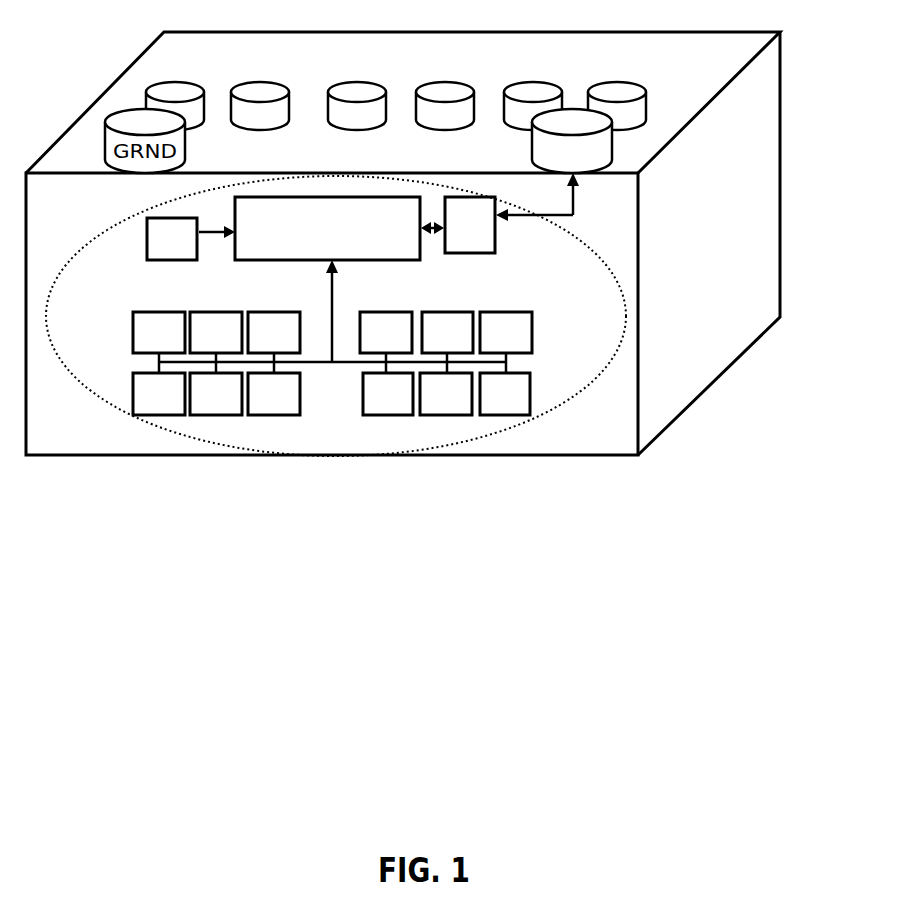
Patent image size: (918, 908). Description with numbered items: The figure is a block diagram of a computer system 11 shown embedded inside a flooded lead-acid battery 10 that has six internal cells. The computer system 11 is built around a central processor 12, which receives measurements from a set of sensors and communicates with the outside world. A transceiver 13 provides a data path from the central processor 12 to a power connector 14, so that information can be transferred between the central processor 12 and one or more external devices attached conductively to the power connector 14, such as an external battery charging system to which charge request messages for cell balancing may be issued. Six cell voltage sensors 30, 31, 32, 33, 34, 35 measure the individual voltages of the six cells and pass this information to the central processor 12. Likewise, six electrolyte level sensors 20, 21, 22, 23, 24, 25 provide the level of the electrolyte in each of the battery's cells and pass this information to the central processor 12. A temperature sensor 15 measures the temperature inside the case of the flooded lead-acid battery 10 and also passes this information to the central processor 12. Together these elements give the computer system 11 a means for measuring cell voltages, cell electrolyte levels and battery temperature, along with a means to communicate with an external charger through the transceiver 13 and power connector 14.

The flooded lead-acid battery 10 is at (710, 388).
The computer system 11 is at (578, 394).
The central processor 12 is at (295, 197).
The transceiver 13 is at (497, 232).
The power connector 14 is at (530, 143).
The temperature sensor 15 is at (147, 237).
The electrolyte level sensor 20 is at (386, 311).
The electrolyte level sensor 21 is at (450, 311).
The electrolyte level sensor 22 is at (508, 311).
The electrolyte level sensor 23 is at (390, 415).
The electrolyte level sensor 24 is at (450, 415).
The electrolyte level sensor 25 is at (530, 390).
The cell voltage sensor 30 is at (160, 311).
The cell voltage sensor 31 is at (216, 311).
The cell voltage sensor 32 is at (273, 311).
The cell voltage sensor 33 is at (133, 395).
The cell voltage sensor 34 is at (213, 415).
The cell voltage sensor 35 is at (275, 415).